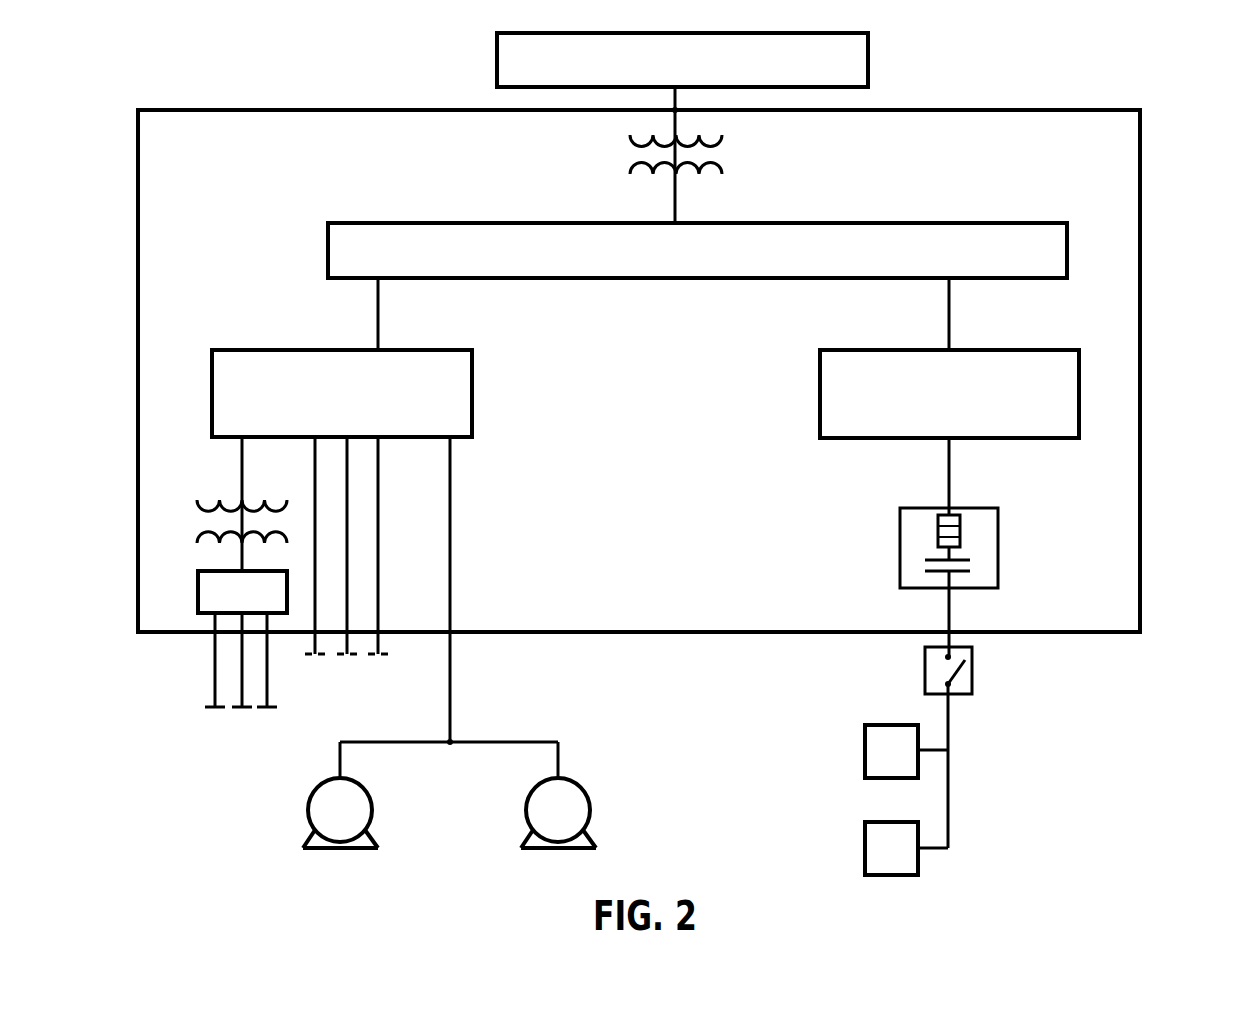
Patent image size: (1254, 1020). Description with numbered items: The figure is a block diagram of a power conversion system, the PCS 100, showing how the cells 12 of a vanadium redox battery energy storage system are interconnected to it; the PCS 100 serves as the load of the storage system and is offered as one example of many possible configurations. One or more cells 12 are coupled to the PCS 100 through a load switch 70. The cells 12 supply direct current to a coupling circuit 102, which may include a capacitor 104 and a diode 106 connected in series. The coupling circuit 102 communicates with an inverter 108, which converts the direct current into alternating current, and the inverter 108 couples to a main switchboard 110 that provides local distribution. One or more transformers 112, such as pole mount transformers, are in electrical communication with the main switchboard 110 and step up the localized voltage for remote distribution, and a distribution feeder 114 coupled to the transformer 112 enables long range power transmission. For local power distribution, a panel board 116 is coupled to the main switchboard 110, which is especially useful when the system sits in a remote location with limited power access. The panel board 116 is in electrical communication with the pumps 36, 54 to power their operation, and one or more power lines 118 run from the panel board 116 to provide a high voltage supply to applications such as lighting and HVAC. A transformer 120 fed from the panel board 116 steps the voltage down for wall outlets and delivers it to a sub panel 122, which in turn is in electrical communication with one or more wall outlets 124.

The power conversion system (PCS) 100 is at (1142, 243).
The distribution feeder 114 is at (713, 75).
The transformer 112 is at (703, 168).
The main switchboard 110 is at (823, 264).
The panel board 116 is at (362, 413).
The inverter 108 is at (980, 411).
The transformer 120 is at (196, 518).
The sub panel 122 is at (263, 603).
The wall outlets 124 is at (267, 676).
The power lines 118 is at (378, 660).
The pump 36 is at (355, 824).
The pump 54 is at (573, 824).
The coupling circuit 102 is at (992, 561).
The diode 106 is at (960, 545).
The capacitor 104 is at (952, 574).
The load switch 70 is at (975, 680).
The cell 12 is at (905, 766).